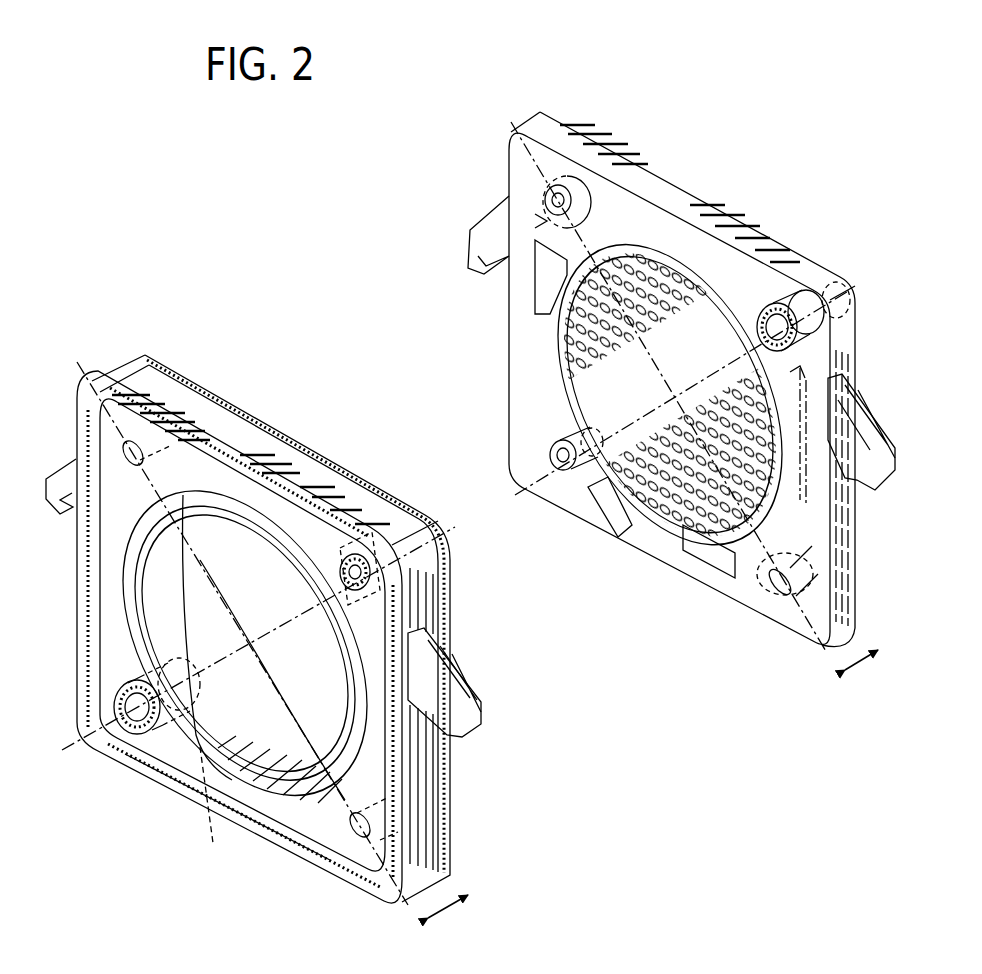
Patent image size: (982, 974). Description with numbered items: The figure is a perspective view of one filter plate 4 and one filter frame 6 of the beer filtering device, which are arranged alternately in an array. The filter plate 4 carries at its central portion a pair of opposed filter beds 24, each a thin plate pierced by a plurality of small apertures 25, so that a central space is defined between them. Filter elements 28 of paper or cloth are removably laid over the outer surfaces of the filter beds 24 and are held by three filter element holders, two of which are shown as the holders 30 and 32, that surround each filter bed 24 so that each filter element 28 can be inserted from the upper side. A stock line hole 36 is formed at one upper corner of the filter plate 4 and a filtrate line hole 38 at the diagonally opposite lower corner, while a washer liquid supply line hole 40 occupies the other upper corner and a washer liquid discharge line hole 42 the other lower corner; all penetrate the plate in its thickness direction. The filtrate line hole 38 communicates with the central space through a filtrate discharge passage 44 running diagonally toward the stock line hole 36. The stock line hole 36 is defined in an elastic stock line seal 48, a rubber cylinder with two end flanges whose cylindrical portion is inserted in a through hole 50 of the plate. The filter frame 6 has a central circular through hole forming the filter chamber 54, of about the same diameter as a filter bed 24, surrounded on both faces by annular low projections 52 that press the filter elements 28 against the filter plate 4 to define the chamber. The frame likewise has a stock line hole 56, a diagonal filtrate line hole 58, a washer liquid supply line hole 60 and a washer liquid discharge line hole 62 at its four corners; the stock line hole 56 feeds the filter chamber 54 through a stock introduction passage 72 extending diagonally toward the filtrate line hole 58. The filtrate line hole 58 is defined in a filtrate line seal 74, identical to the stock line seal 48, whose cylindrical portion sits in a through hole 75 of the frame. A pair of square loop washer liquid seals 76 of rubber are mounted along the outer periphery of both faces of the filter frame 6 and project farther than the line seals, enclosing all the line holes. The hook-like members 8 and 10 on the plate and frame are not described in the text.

The filter plate 4 is at (656, 185).
The filter frame 6 is at (210, 423).
The latch hooks of second plate 8 is at (473, 225).
The latch hooks of first plate 10 is at (73, 463).
The filter bed 24 is at (680, 548).
The small apertures 25 is at (663, 493).
The filter element 28 is at (813, 567).
The filter element holder 30 is at (542, 280).
The filter element holder 32 is at (823, 452).
The stock line hole 36 is at (807, 347).
The filtrate line hole 38 is at (563, 470).
The washer liquid supply line hole 40 is at (552, 207).
The washer liquid discharge line hole 42 is at (778, 597).
The filtrate discharge passage 44 is at (573, 437).
The stock line seal 48 is at (767, 307).
The through hole 50 is at (835, 313).
The annular low projections 52 is at (277, 787).
The filter chamber 54 is at (197, 587).
The stock line hole 56 is at (370, 577).
The filtrate line hole 58 is at (133, 773).
The washer liquid supply line hole 60 is at (127, 447).
The washer liquid discharge line hole 62 is at (353, 835).
The stock introduction passage 72 is at (360, 523).
The filtrate line seal 74 is at (127, 697).
The through hole 75 is at (218, 813).
The washer liquid seal 76 is at (107, 380).